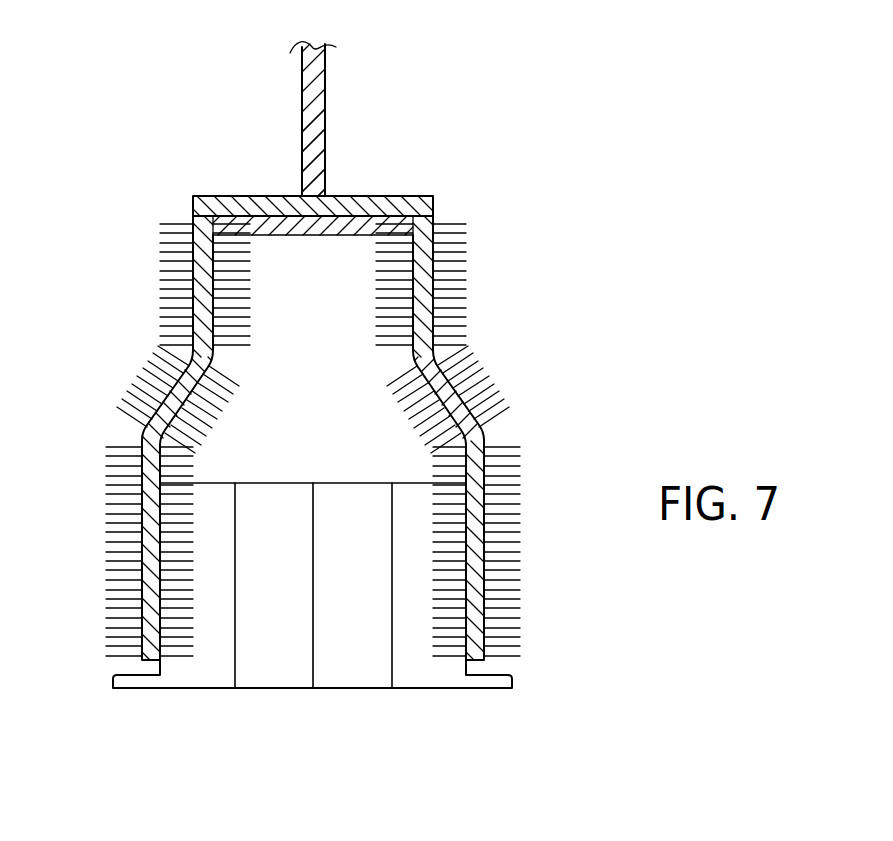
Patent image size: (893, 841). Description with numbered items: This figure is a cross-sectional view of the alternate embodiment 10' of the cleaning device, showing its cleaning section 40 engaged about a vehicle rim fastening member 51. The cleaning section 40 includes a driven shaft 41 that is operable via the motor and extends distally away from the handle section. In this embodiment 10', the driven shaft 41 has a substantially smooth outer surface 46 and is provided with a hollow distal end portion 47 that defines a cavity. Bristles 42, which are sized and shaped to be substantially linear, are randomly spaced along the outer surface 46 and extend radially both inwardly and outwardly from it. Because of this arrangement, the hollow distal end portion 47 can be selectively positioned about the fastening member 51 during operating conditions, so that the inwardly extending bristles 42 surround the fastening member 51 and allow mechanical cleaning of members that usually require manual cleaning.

The alternate embodiment 10' is at (382, 390).
The cleaning section 40 is at (326, 70).
The driven shaft 41 is at (313, 132).
The bristles 42 is at (178, 225).
The outer surface 46 is at (433, 351).
The hollow distal end portion 47 is at (160, 603).
The fastening member 51 is at (354, 620).